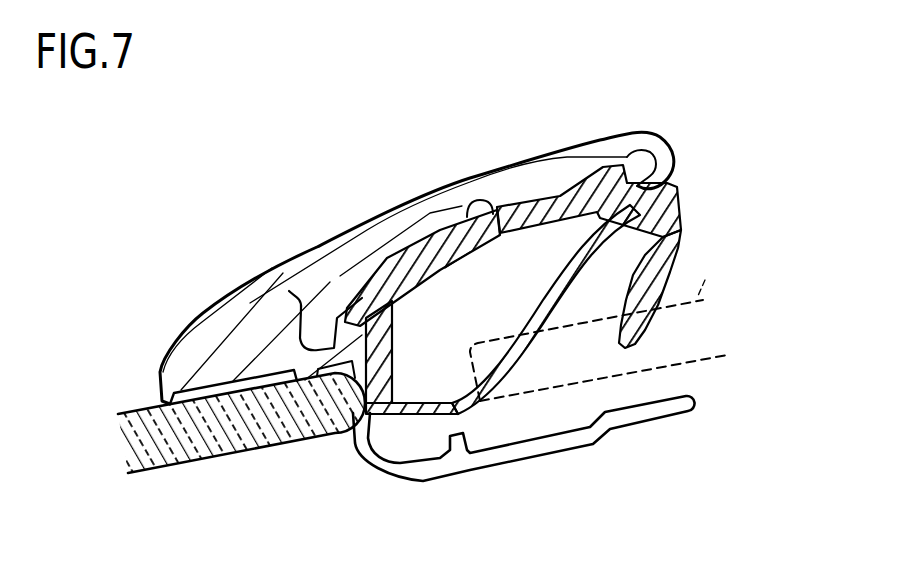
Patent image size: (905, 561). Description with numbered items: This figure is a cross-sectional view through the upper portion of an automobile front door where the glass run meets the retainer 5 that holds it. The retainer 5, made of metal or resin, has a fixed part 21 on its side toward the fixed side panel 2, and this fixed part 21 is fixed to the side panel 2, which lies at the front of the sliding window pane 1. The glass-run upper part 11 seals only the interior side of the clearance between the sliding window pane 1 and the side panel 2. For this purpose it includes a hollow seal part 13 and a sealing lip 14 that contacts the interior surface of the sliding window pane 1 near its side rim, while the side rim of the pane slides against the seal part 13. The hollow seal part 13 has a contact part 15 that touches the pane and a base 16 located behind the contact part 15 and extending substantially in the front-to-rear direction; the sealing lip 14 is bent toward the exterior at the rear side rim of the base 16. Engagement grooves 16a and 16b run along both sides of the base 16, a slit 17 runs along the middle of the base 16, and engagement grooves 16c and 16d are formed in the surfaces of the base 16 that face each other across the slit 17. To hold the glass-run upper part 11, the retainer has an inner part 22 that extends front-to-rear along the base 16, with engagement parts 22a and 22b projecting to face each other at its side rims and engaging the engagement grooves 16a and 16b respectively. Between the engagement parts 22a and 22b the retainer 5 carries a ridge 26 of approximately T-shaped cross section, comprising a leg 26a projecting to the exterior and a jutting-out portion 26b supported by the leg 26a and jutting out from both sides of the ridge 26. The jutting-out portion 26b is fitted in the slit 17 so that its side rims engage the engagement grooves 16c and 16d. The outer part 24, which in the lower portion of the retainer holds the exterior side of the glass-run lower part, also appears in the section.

The sliding window pane 1 is at (705, 280).
The fixed side panel 2 is at (133, 411).
The retainer 5 is at (243, 284).
The glass-run upper part 11 is at (679, 191).
The hollow seal part 13 is at (361, 418).
The sealing lip 14 is at (688, 303).
The contact part 15 is at (510, 368).
The base 16 is at (550, 195).
The engagement groove 16a is at (683, 213).
The engagement groove 16b is at (393, 350).
The engagement groove 16c is at (484, 200).
The engagement groove 16d is at (391, 256).
The slit 17 is at (451, 257).
The fixed part 21 is at (197, 337).
The inner part 22 is at (590, 150).
The engagement part 22a is at (643, 148).
The engagement part 22b is at (289, 291).
The outer part 24 is at (490, 464).
The ridge 26 is at (482, 242).
The leg 26a is at (470, 200).
The jutting-out portion 26b is at (457, 250).